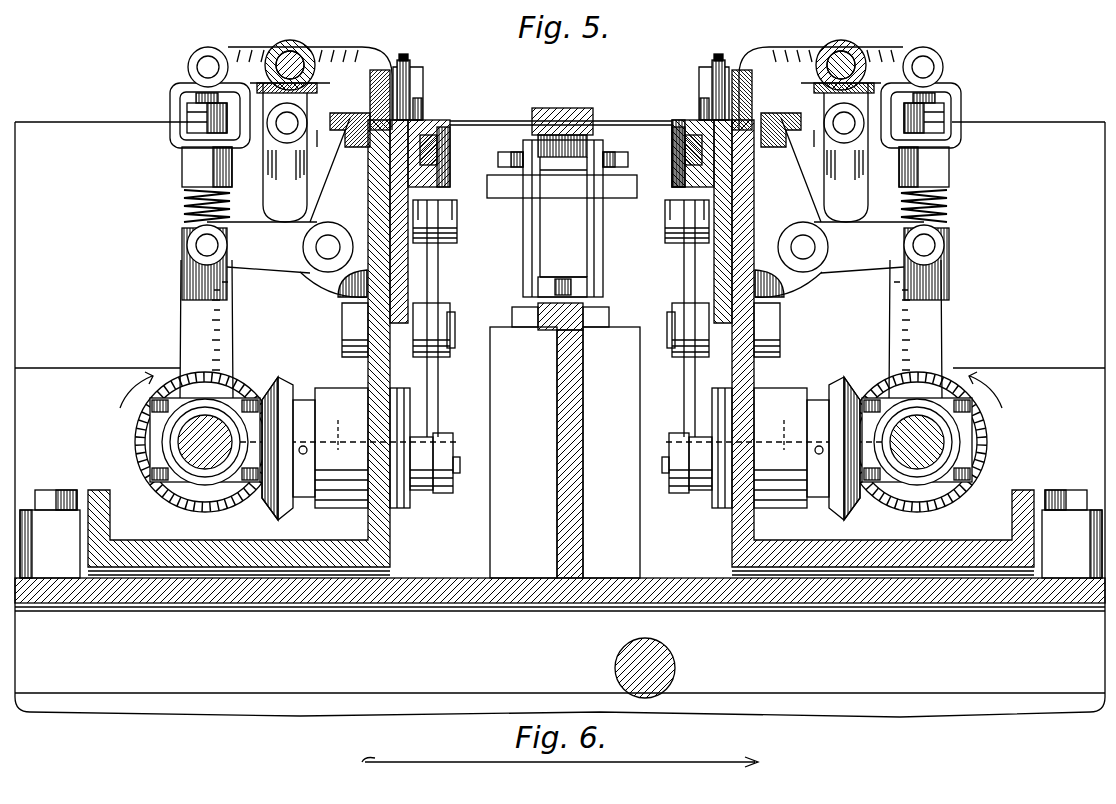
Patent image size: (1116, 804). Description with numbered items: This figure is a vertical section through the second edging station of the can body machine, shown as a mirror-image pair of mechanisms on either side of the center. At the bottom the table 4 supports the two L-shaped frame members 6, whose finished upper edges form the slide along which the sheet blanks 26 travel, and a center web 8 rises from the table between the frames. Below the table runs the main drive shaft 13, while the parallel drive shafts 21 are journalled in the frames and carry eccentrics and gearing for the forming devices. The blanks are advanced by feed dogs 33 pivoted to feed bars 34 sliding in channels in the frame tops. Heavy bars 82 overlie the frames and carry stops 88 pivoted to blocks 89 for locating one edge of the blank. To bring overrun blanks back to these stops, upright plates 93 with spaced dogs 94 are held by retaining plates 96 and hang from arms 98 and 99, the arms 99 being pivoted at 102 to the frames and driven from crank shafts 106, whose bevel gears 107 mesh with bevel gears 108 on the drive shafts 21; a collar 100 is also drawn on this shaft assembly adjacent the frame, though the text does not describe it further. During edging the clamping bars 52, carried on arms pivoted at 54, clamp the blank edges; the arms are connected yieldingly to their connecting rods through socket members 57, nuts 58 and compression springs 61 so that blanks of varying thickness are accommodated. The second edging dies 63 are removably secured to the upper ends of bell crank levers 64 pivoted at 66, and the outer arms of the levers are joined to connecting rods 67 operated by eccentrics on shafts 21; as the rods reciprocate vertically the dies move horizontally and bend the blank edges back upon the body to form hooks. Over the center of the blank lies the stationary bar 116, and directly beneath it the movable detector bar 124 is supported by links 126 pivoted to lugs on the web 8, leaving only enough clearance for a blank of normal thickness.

In FIG. 5, the table 4 is at (505, 604).
In FIG. 5, the frame members 6 is at (392, 536).
In FIG. 5, the center web 8 is at (584, 402).
In FIG. 5, the main drive shaft 13 is at (675, 668).
In FIG. 5, the drive shafts 21 is at (205, 440).
In FIG. 5, the blanks 26 is at (481, 121).
In FIG. 6, the blanks 26 is at (447, 760).
In FIG. 5, the feed dogs 33 is at (676, 152).
In FIG. 5, the feed bars 34 is at (423, 163).
In FIG. 5, the clamping bars 52 is at (375, 70).
In FIG. 5, the pivot 54 is at (300, 57).
In FIG. 5, the socket members 57 is at (172, 100).
In FIG. 5, the nuts 58 is at (943, 111).
In FIG. 5, the compression springs 61 is at (183, 206).
In FIG. 5, the die members 63 is at (343, 113).
In FIG. 5, the bell crank levers 64 is at (565, 191).
In FIG. 5, the pivot 66 is at (326, 255).
In FIG. 5, the connecting rods 67 is at (182, 312).
In FIG. 5, the bars 82 is at (424, 80).
In FIG. 5, the stops 88 is at (423, 100).
In FIG. 5, the blocks 89 is at (404, 48).
In FIG. 5, the plates 93 is at (453, 186).
In FIG. 5, the dogs 94 is at (443, 125).
In FIG. 5, the retaining plates 96 is at (452, 158).
In FIG. 5, the arms 98 is at (340, 290).
In FIG. 5, the arms 99 is at (439, 270).
In FIG. 5, the collar 100 is at (456, 465).
In FIG. 5, the pivotal points 102 is at (475, 323).
In FIG. 5, the crank shafts 106 is at (561, 448).
In FIG. 5, the bevel gears 107 is at (280, 513).
In FIG. 5, the bevel gears 108 is at (240, 395).
In FIG. 5, the stationary bar 116 is at (585, 103).
In FIG. 5, the detector bar 124 is at (598, 132).
In FIG. 5, the links 126 is at (527, 225).